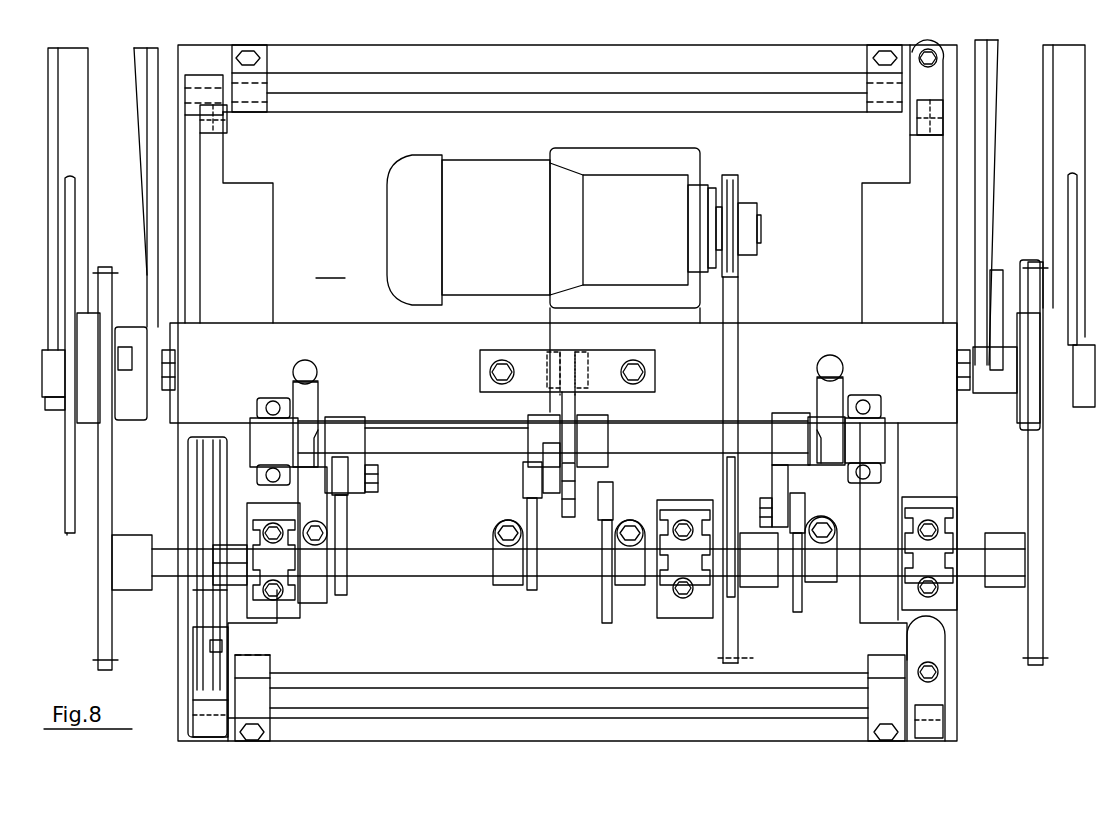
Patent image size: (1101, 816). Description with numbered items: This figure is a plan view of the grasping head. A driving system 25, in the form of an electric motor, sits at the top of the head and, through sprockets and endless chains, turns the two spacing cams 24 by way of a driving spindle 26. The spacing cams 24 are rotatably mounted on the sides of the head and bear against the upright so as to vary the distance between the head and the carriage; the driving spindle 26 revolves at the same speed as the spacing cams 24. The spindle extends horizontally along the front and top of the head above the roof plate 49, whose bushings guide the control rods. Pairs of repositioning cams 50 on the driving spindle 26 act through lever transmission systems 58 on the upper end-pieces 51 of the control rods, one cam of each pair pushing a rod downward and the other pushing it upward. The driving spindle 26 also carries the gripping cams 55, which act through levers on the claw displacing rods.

The spacing cam 24 is at (71, 536).
The driving system 25 is at (403, 213).
The driving spindle 26 is at (398, 561).
The roof plate 49 is at (566, 390).
The repositioning cam 50 is at (341, 528).
The upper end-piece 51 is at (320, 364).
The gripping cam 55 is at (215, 526).
The lever transmission system 58 is at (326, 408).